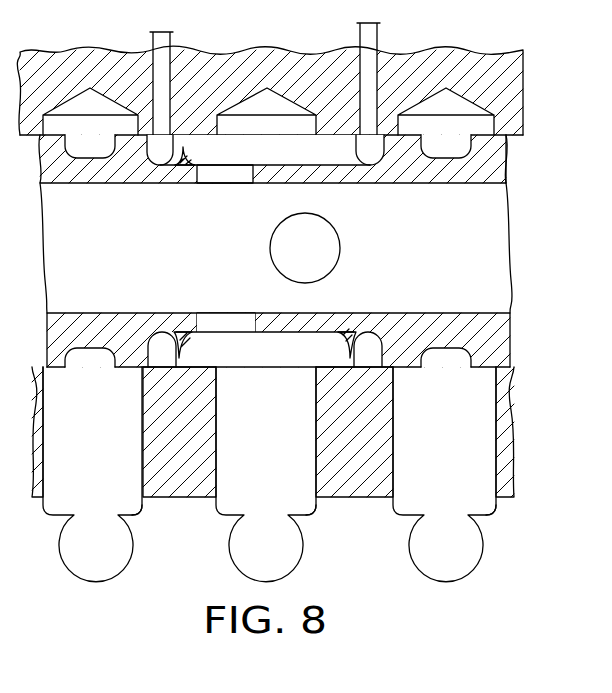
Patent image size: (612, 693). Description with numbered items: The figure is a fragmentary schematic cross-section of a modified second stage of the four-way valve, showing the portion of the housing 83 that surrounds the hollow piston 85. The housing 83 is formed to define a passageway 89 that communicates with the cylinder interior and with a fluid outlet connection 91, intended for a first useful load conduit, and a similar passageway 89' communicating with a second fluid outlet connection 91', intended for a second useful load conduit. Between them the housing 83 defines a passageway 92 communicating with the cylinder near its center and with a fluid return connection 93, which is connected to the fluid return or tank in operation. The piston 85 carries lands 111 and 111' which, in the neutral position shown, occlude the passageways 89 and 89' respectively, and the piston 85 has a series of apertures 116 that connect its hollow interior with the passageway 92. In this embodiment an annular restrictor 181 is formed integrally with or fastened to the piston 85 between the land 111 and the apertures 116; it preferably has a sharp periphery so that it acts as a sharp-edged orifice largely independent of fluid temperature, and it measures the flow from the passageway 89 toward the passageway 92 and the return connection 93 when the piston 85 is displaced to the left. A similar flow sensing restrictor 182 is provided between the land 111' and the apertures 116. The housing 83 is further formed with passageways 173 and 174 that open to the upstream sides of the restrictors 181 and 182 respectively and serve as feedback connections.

The housing 83 is at (423, 52).
The passageway 173 is at (170, 80).
The passageway 174 is at (360, 82).
The annular restrictor 181 is at (190, 156).
The flow sensing restrictor 182 is at (345, 341).
The land 111 is at (272, 178).
The land 111' is at (471, 178).
The apertures 116 is at (236, 187).
The hollow piston 85 is at (86, 313).
The passageway 89 is at (92, 474).
The passageway 92 is at (273, 448).
The passageway 89' is at (444, 474).
The fluid outlet connection 91 is at (153, 518).
The fluid return connection 93 is at (316, 512).
The fluid outlet connection 91' is at (509, 518).